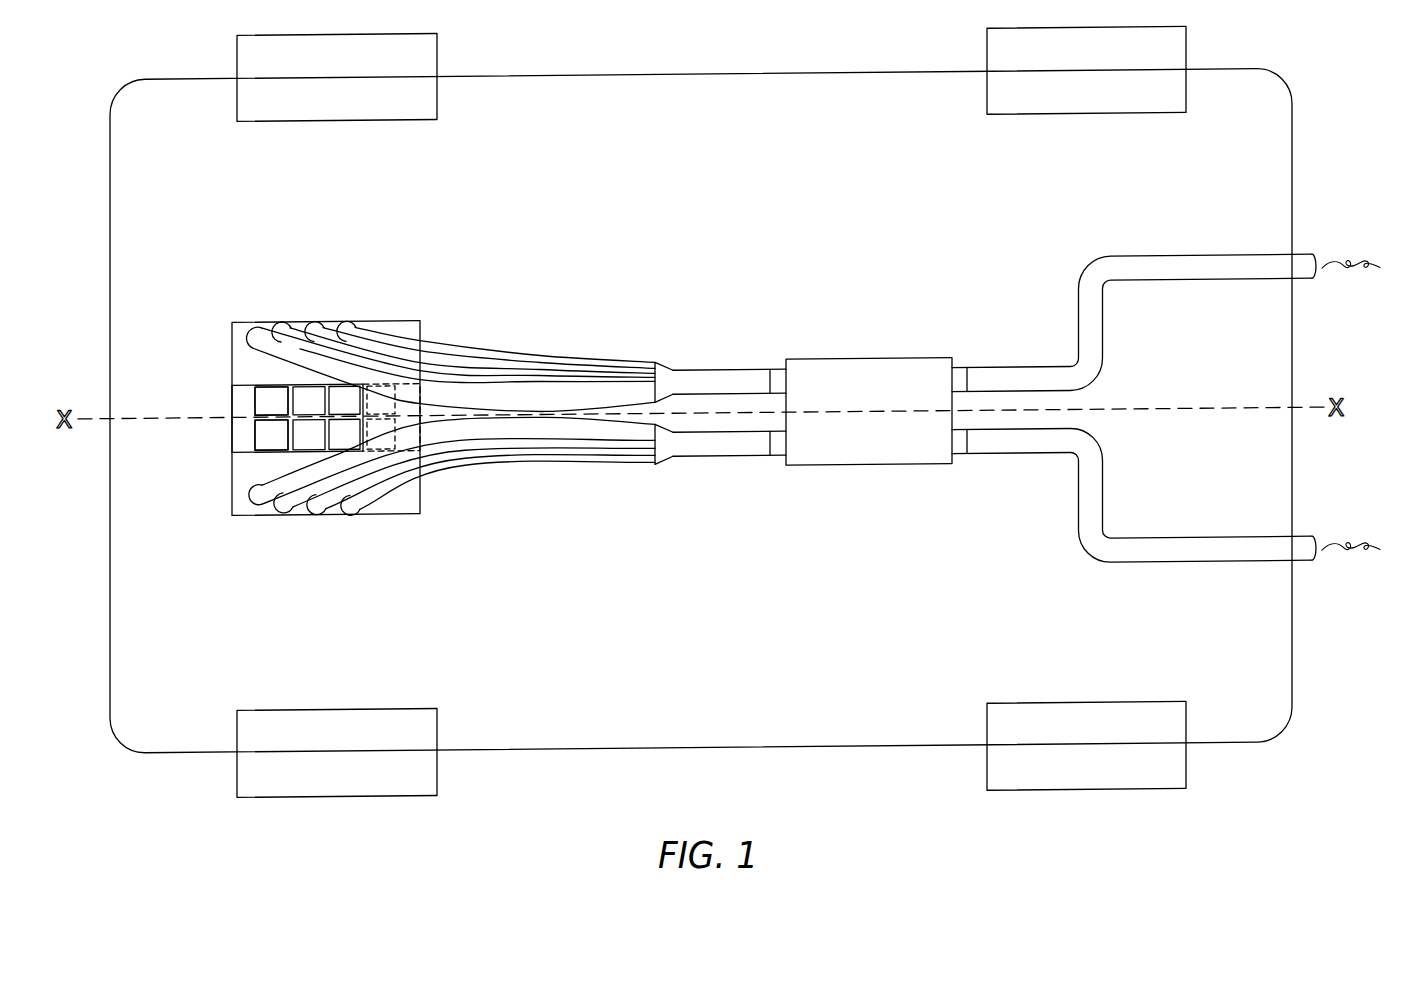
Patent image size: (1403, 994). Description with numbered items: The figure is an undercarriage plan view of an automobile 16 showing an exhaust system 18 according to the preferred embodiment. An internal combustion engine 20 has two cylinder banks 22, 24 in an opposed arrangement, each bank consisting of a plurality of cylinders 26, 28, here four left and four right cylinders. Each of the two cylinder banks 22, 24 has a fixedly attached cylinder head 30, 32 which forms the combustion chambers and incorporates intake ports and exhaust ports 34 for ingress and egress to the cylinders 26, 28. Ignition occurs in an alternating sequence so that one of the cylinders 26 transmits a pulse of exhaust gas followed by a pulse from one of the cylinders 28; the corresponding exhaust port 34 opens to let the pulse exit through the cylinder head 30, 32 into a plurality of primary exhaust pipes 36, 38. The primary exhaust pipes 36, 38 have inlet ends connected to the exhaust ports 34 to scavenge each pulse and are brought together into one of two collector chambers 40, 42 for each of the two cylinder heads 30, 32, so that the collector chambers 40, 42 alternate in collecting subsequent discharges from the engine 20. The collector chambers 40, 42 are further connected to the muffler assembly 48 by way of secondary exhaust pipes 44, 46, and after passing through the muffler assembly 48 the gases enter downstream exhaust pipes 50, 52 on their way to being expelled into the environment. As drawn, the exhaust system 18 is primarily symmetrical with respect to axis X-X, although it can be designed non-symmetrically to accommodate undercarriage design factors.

The automobile 16 is at (838, 74).
The exhaust system 18 is at (816, 371).
The internal combustion engine 20 is at (278, 408).
The cylinder bank 22 is at (270, 375).
The cylinder bank 24 is at (266, 459).
The cylinders 26 is at (254, 399).
The cylinders 28 is at (254, 429).
The cylinder head 30 is at (240, 332).
The cylinder head 32 is at (242, 494).
The exhaust ports 34 is at (267, 497).
The primary exhaust pipes 36 is at (478, 474).
The primary exhaust pipes 38 is at (450, 354).
The collector chamber 40 is at (664, 360).
The collector chamber 42 is at (662, 467).
The secondary exhaust pipe 44 is at (718, 370).
The secondary exhaust pipe 46 is at (718, 457).
The muffler assembly 48 is at (875, 360).
The downstream exhaust pipe 50 is at (1175, 260).
The downstream exhaust pipe 52 is at (1172, 541).